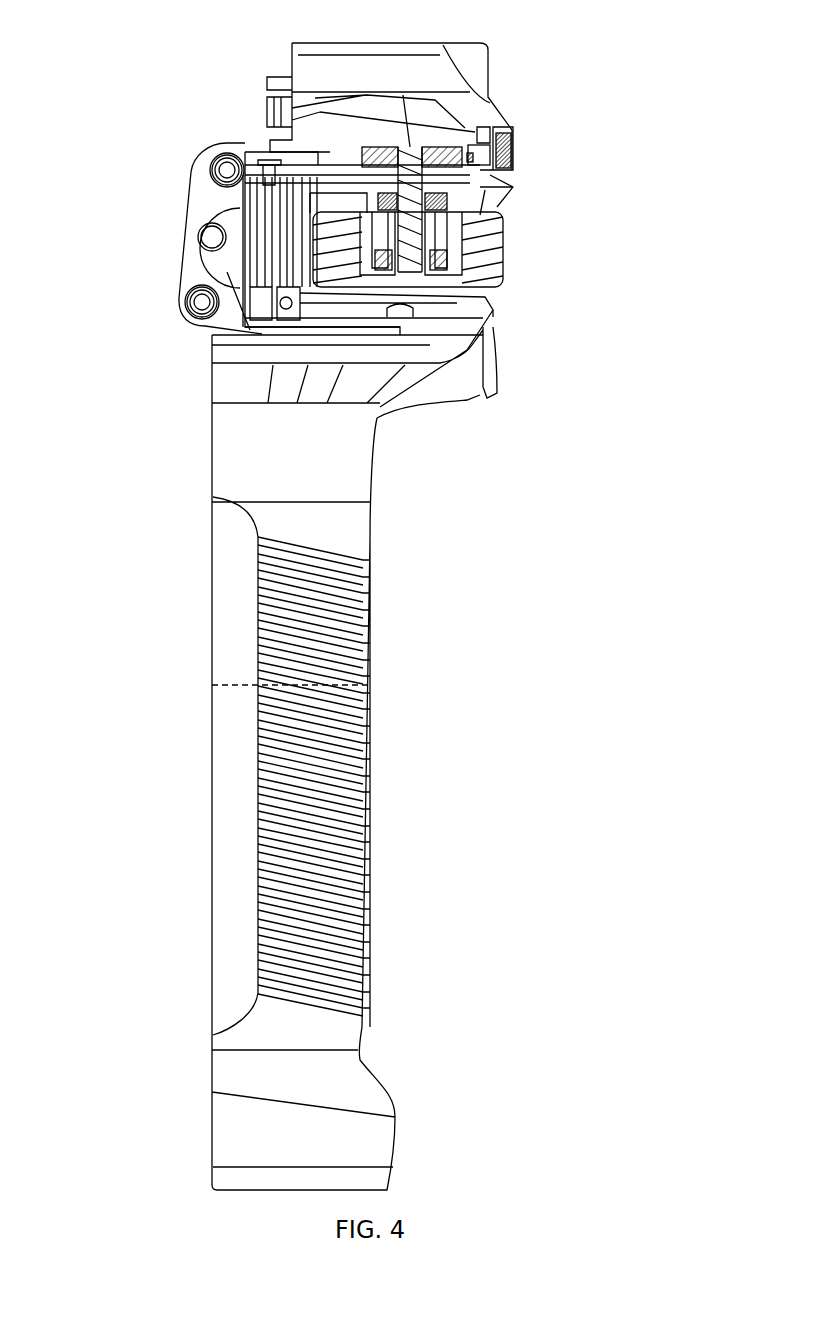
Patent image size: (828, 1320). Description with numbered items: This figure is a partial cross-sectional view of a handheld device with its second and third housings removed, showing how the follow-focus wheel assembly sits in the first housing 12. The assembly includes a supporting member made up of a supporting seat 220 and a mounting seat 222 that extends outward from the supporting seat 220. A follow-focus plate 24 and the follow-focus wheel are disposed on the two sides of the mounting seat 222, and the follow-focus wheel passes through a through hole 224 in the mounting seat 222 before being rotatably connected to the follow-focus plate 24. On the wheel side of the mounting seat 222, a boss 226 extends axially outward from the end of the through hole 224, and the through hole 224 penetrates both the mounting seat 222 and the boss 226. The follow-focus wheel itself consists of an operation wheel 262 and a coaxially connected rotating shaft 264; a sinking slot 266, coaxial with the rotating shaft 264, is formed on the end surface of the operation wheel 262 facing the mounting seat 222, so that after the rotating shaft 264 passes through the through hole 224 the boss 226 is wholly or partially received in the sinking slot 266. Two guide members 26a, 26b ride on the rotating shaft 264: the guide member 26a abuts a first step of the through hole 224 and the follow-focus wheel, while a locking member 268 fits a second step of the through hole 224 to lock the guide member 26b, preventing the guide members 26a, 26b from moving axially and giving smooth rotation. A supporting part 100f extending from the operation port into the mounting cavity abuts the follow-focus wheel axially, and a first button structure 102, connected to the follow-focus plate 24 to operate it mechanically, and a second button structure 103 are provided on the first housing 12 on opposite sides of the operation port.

The first housing 12 is at (330, 540).
The follow-focus plate 24 is at (382, 172).
The guide member 26a is at (430, 297).
The guide member 26b is at (437, 220).
The supporting part 100f is at (473, 313).
The first button structure 102 is at (498, 150).
The second button structure 103 is at (487, 377).
The supporting seat 220 is at (277, 248).
The mounting seat 222 is at (330, 187).
The through hole 224 is at (377, 187).
The boss 226 is at (328, 203).
The operation wheel 262 is at (485, 242).
The rotating shaft 264 is at (408, 163).
The sinking slot 266 is at (462, 267).
The locking member 268 is at (435, 197).